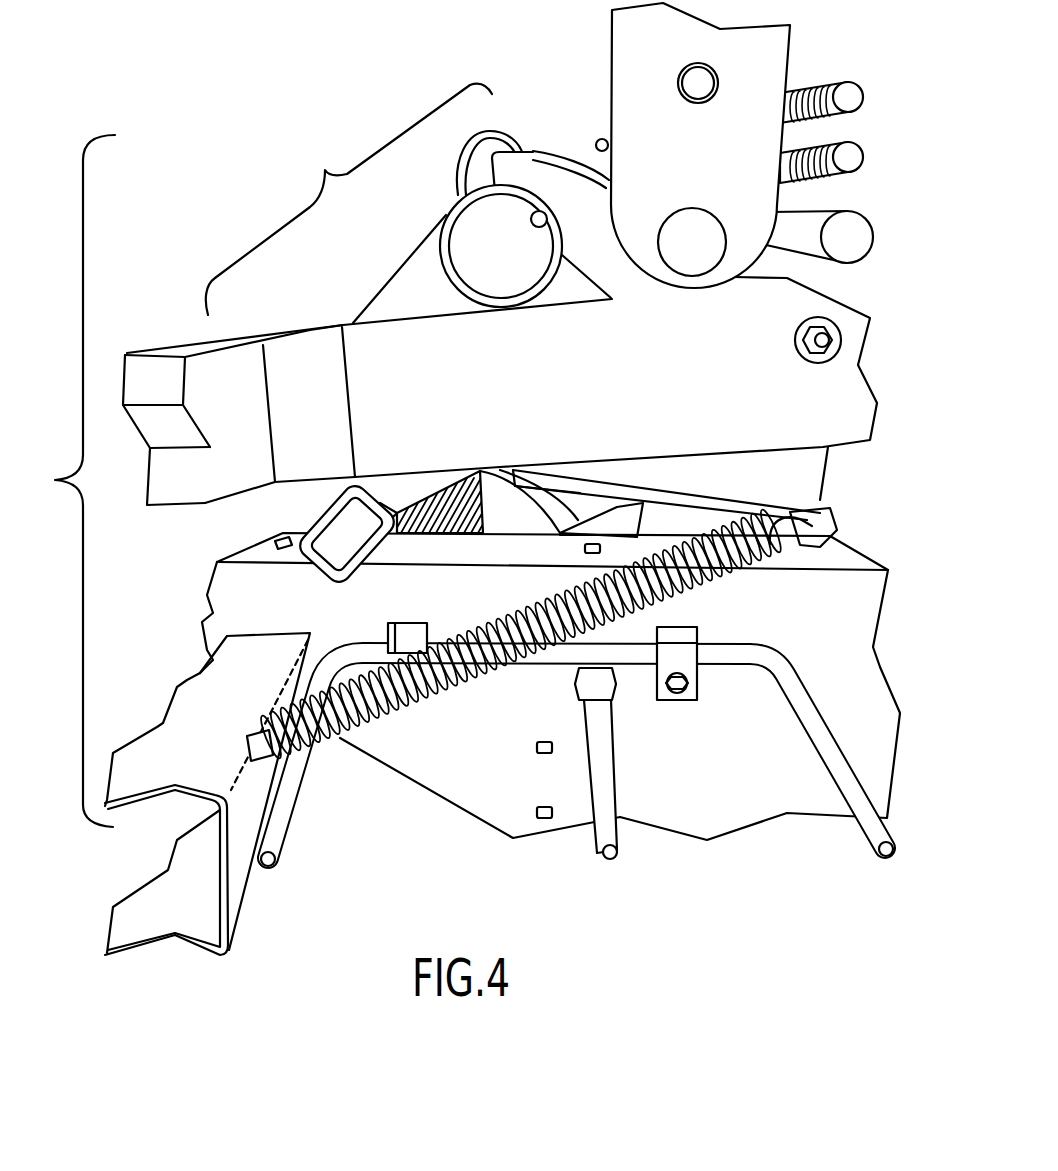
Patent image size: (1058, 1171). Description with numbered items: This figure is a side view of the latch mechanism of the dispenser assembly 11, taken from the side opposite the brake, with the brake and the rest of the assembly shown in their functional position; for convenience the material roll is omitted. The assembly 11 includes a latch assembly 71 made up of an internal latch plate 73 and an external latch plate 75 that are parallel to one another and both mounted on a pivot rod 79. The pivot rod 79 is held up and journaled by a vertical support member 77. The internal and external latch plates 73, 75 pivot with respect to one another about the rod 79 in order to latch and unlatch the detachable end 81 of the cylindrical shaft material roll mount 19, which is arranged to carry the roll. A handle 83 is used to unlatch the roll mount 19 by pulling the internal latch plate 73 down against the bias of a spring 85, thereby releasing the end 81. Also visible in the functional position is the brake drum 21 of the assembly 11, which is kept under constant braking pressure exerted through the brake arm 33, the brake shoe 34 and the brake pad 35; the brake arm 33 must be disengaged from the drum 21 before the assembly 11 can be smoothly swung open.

The dispenser assembly 11 is at (325, 170).
The material roll mount 19 is at (503, 283).
The brake drum 21 is at (547, 143).
The brake arm 33 is at (612, 135).
The brake shoe 34 is at (590, 138).
The brake pad 35 is at (580, 143).
The latch assembly 71 is at (68, 481).
The internal latch plate 73 is at (432, 304).
The external latch plate 75 is at (614, 391).
The vertical support member 77 is at (706, 174).
The pivot rod 79 is at (703, 256).
The detachable end 81 is at (456, 200).
The handle 83 is at (335, 562).
The spring 85 is at (470, 695).